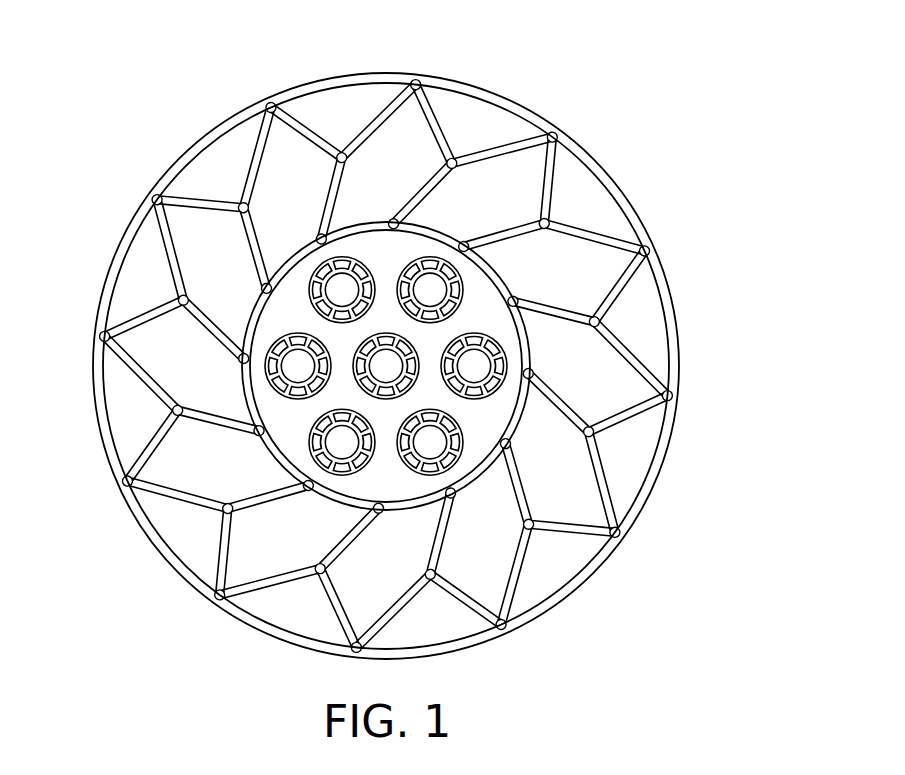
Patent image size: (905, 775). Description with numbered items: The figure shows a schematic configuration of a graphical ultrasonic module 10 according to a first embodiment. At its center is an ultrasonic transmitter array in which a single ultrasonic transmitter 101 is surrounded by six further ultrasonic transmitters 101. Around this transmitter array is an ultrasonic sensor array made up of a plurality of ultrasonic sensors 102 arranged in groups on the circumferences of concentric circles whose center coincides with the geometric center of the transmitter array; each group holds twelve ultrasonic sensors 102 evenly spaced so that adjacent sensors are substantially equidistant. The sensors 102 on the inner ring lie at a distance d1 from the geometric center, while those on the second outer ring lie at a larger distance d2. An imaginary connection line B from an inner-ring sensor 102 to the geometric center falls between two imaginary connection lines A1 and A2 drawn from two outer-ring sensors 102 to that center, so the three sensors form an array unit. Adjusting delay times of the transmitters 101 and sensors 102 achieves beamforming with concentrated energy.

The graphical ultrasonic module 10 is at (64, 80).
The ultrasonic transmitter 101 is at (510, 353).
The ultrasonic sensor 102 is at (672, 397).
The imaginary connection line A1 is at (386, 366).
The imaginary connection line A2 is at (386, 366).
The imaginary connection line B is at (386, 366).
The distance d1 is at (386, 366).
The distance d2 is at (386, 366).